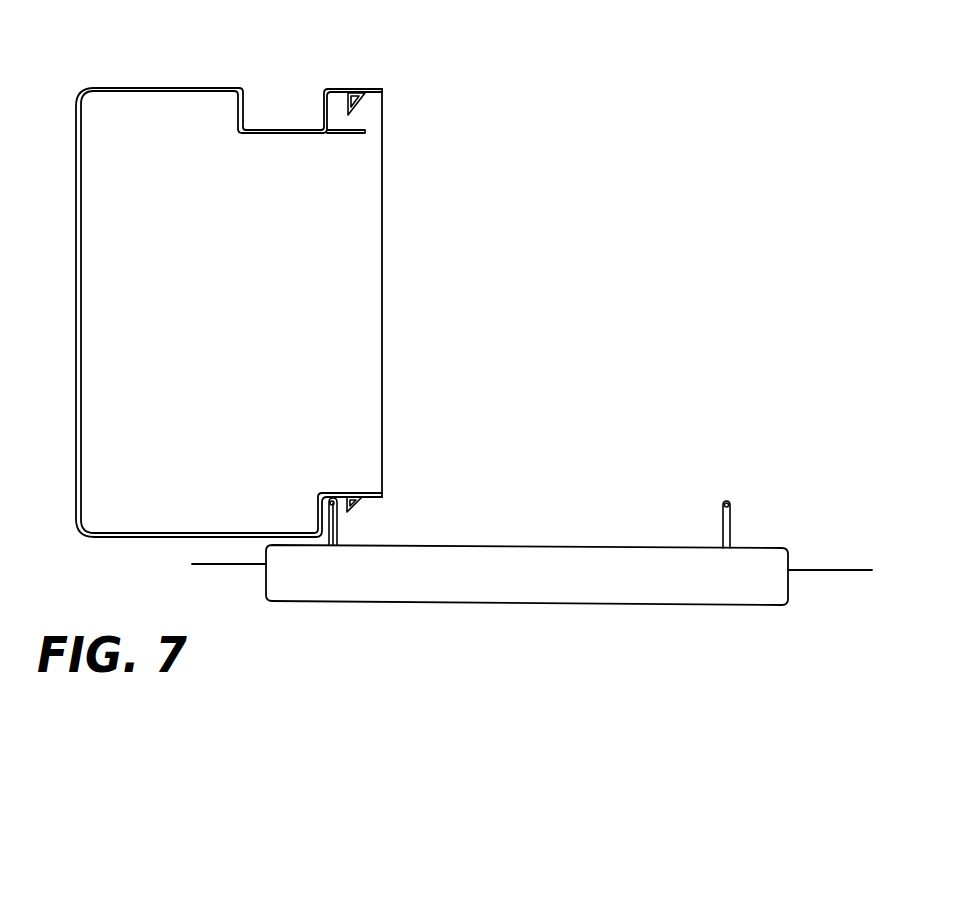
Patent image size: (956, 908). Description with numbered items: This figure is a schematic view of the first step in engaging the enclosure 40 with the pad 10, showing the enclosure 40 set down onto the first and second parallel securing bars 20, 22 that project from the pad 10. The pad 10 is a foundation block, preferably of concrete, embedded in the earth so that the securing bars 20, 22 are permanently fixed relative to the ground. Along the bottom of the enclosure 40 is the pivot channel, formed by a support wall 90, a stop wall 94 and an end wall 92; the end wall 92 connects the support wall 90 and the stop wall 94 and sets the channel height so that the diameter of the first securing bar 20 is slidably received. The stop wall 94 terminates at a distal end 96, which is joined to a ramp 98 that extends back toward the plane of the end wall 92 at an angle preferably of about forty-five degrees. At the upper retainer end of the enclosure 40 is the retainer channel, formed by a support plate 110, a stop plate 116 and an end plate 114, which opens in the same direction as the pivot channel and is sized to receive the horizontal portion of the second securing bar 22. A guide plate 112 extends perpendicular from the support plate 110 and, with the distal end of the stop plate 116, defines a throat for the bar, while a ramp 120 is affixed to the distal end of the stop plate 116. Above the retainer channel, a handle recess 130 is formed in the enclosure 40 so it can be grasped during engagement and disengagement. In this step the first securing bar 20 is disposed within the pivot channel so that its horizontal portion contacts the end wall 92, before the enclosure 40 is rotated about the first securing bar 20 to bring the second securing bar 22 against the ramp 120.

The pad 10 is at (790, 538).
The first securing bar 20 is at (342, 546).
The second securing bar 22 is at (731, 542).
The enclosure 40 is at (502, 255).
The support wall 90 is at (317, 517).
The end wall 92 is at (337, 490).
The stop wall 94 is at (327, 503).
The distal end of the stop wall 96 is at (345, 511).
The ramp 98 is at (357, 506).
The support plate 110 is at (323, 110).
The guide plate 112 is at (357, 134).
The end plate 114 is at (338, 89).
The stop plate 116 is at (341, 115).
The ramp 120 is at (362, 104).
The handle recess 130 is at (259, 90).